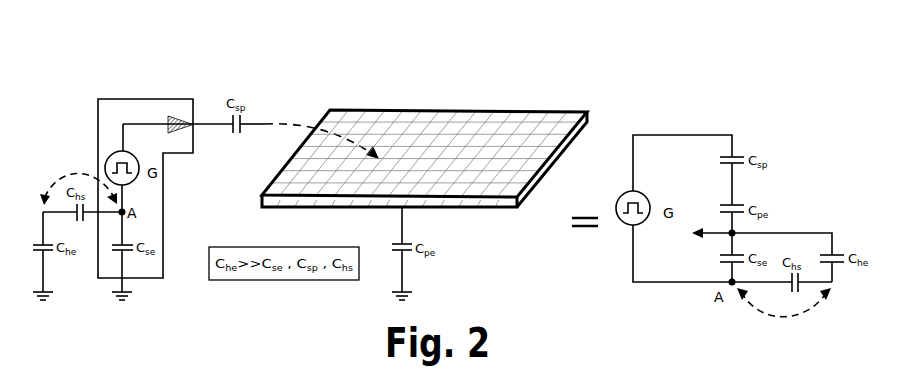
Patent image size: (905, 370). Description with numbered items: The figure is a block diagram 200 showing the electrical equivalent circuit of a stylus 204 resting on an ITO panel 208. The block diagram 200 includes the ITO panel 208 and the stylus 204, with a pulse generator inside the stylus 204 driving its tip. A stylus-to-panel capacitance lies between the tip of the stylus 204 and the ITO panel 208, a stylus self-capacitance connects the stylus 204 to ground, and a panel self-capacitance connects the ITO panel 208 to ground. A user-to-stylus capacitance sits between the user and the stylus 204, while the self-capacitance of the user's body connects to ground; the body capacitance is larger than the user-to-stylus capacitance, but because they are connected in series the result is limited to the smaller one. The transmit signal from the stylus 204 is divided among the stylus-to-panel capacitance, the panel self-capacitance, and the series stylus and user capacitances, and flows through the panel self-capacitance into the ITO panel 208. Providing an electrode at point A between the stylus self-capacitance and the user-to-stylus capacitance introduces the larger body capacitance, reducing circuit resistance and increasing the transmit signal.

The block diagram 200 is at (363, 78).
The stylus 204 is at (163, 99).
The ITO panel 208 is at (497, 109).